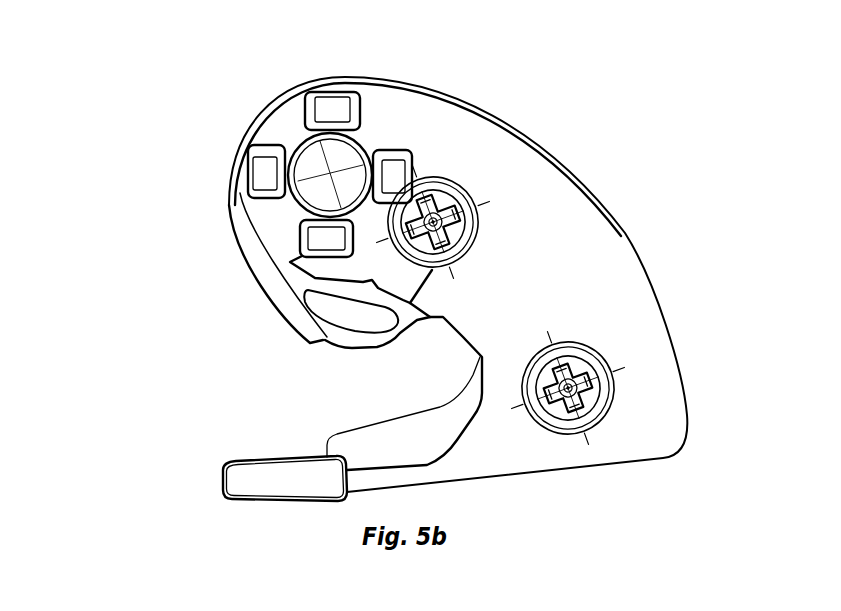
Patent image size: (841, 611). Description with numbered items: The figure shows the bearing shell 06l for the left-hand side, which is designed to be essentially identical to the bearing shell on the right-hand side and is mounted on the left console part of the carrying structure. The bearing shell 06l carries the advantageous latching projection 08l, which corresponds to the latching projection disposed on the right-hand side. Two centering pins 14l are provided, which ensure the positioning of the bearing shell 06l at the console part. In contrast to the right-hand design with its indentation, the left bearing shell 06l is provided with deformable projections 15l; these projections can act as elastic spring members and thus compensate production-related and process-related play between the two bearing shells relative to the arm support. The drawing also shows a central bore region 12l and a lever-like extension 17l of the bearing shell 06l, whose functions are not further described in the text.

The bearing shell 06l is at (100, 70).
The latching projection 08l is at (333, 334).
The cylindrical boss 12l is at (317, 190).
The centering pins 14l is at (580, 372).
The deformable projections 15l is at (265, 167).
The lever arm 17l is at (310, 485).